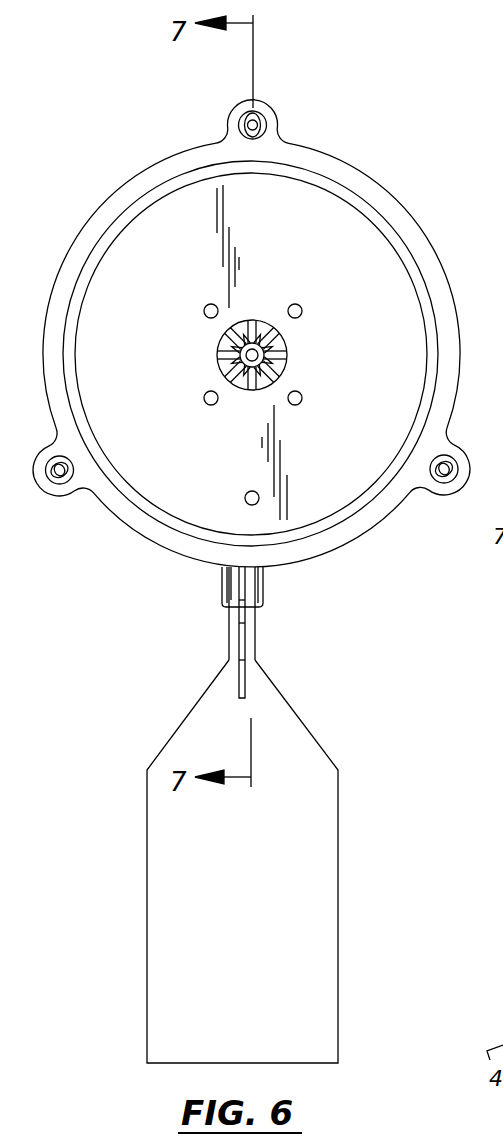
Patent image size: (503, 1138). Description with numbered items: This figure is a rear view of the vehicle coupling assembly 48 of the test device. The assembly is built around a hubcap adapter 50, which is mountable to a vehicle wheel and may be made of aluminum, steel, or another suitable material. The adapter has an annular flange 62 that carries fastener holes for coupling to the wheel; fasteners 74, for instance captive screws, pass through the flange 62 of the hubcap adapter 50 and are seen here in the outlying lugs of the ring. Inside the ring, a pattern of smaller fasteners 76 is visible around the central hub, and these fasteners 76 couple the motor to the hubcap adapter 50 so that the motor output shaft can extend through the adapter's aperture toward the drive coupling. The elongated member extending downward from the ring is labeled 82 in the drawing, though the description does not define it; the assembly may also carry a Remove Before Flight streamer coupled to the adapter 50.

The vehicle coupling assembly 48 is at (147, 612).
The hubcap adapter 50 is at (63, 196).
The annular flange 62 is at (294, 141).
The fasteners 74 is at (259, 126).
The fasteners 76 is at (302, 309).
The body 82 is at (110, 905).